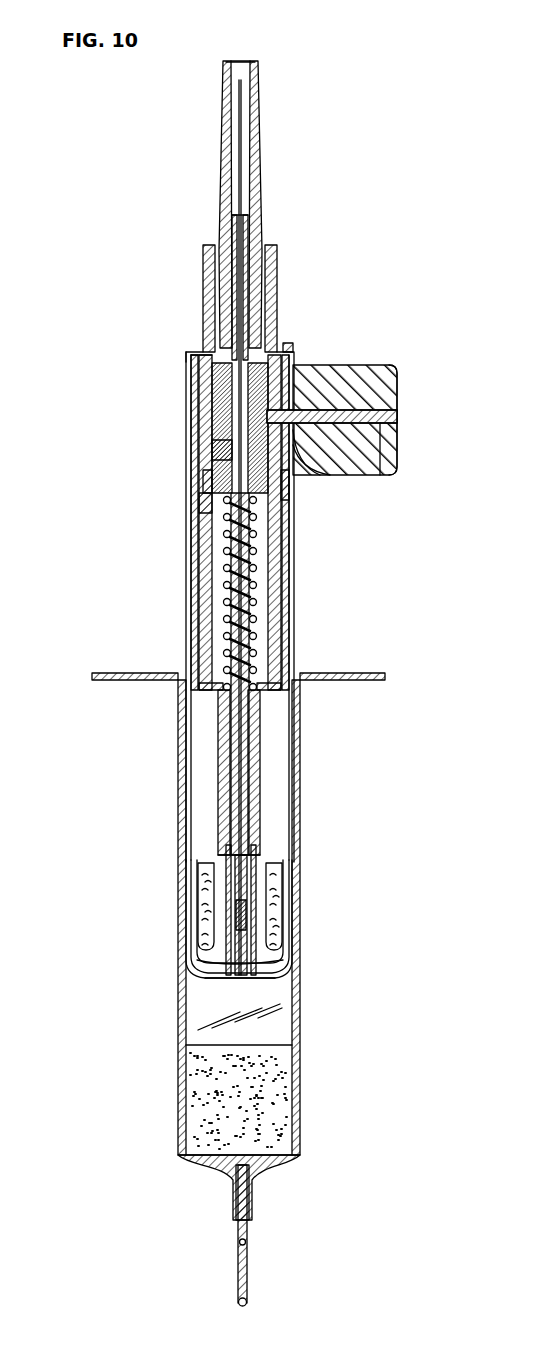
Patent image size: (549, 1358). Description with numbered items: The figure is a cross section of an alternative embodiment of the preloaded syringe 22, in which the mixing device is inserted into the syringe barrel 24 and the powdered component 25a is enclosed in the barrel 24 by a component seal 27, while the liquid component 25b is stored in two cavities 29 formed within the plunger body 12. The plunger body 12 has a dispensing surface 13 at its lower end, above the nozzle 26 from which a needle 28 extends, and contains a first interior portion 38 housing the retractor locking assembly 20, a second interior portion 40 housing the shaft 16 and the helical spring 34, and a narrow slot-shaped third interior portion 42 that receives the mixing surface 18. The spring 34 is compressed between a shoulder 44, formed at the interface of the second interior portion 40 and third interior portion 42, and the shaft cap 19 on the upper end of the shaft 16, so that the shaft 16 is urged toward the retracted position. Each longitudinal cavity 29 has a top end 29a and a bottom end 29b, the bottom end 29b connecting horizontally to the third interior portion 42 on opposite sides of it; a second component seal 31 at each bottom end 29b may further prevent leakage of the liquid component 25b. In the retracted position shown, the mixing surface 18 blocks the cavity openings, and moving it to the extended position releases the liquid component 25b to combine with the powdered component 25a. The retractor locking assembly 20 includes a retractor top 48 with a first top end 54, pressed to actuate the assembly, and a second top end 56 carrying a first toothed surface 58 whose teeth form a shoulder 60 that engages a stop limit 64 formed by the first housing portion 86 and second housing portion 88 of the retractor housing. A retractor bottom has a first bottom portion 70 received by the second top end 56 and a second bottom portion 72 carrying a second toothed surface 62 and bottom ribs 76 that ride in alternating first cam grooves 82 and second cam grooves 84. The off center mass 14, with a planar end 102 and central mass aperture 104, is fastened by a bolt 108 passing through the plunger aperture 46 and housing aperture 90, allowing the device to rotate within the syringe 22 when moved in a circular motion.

The plunger body 12 is at (290, 940).
The dispensing surface 13 is at (265, 985).
The off center mass 14 is at (335, 365).
The shaft 16 is at (242, 790).
The mixing surface 18 is at (247, 912).
The shaft cap 19 is at (205, 505).
The retractor locking assembly 20 is at (283, 243).
The syringe 22 is at (184, 1202).
The syringe barrel 24 is at (299, 1055).
The powdered component 25a is at (265, 1098).
The liquid component 25b is at (205, 900).
The nozzle 26 is at (252, 1195).
The component seal 27 is at (270, 1045).
The syringe needle 28 is at (248, 1272).
The cavities 29 is at (285, 906).
The top end 29a is at (276, 862).
The bottom end 29b is at (293, 968).
The second component seal 31 is at (290, 953).
The helical spring 34 is at (249, 760).
The first interior portion 38 is at (281, 622).
The second interior portion 40 is at (260, 728).
The third interior portion 42 is at (247, 872).
The shoulder 44 is at (256, 826).
The plunger aperture 46 is at (323, 475).
The retractor top 48 is at (262, 128).
The first top end 54 is at (235, 62).
The second top end 56 is at (277, 342).
The first toothed surface 58 is at (185, 353).
The shoulder 60 is at (210, 348).
The second toothed surface 62 is at (195, 365).
The stop limit 64 is at (205, 355).
The first bottom portion 70 is at (220, 220).
The second bottom portion 72 is at (207, 478).
The bottom ribs 76 is at (225, 430).
The first cam grooves 82 is at (215, 448).
The second cam grooves 84 is at (290, 490).
The first housing portion 86 is at (205, 258).
The second housing portion 88 is at (203, 627).
The housing aperture 90 is at (300, 470).
The planar end 102 is at (397, 387).
The central mass aperture 104 is at (397, 416).
The bolt 108 is at (370, 467).